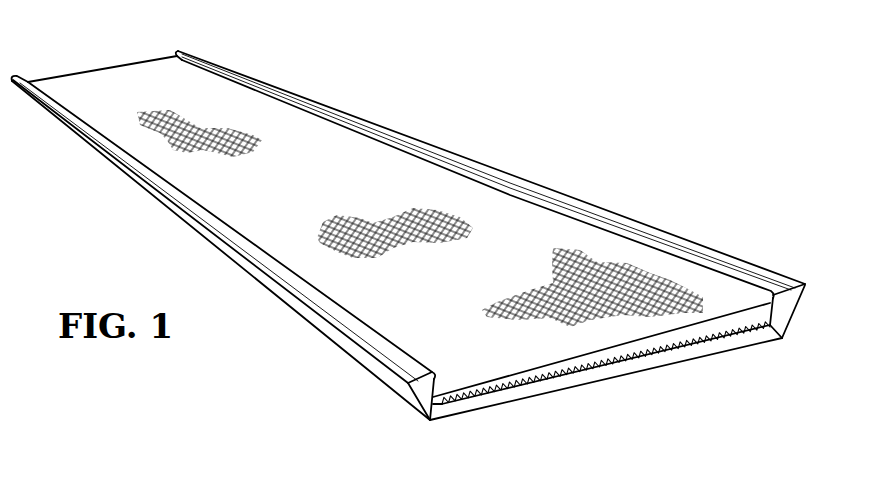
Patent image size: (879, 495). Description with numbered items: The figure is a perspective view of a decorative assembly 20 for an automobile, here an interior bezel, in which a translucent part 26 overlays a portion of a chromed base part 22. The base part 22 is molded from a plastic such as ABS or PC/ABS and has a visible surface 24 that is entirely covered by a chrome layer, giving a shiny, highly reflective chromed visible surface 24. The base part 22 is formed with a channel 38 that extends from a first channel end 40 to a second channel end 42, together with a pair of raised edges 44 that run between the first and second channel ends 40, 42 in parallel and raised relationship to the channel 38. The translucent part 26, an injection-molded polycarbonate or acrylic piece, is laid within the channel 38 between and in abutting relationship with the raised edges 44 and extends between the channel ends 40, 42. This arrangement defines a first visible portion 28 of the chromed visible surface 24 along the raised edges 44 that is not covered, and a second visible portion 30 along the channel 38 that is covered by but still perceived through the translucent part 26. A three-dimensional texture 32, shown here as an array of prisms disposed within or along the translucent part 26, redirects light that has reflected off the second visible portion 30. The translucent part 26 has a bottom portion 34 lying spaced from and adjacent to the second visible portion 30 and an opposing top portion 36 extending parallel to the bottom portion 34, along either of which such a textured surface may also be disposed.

The decorative assembly 20 is at (639, 157).
The base part 22 is at (408, 404).
The visible surface 24 is at (460, 402).
The translucent part 26 is at (383, 163).
The first visible portion 28 is at (104, 139).
The second visible portion 30 is at (727, 333).
The three-dimensional texture 32 is at (682, 343).
The bottom portion 34 is at (702, 341).
The top portion 36 is at (497, 213).
The channel 38 is at (652, 351).
The first channel end 40 is at (760, 340).
The second channel end 42 is at (46, 77).
The raised edges 44 is at (196, 200).